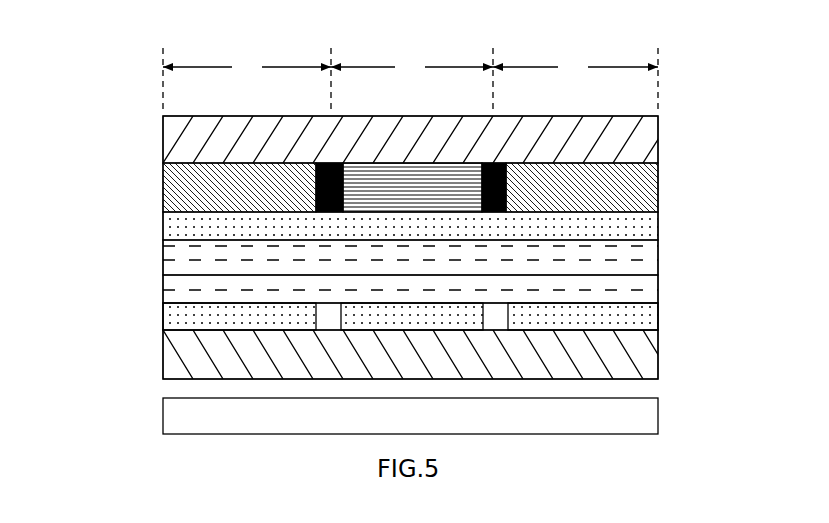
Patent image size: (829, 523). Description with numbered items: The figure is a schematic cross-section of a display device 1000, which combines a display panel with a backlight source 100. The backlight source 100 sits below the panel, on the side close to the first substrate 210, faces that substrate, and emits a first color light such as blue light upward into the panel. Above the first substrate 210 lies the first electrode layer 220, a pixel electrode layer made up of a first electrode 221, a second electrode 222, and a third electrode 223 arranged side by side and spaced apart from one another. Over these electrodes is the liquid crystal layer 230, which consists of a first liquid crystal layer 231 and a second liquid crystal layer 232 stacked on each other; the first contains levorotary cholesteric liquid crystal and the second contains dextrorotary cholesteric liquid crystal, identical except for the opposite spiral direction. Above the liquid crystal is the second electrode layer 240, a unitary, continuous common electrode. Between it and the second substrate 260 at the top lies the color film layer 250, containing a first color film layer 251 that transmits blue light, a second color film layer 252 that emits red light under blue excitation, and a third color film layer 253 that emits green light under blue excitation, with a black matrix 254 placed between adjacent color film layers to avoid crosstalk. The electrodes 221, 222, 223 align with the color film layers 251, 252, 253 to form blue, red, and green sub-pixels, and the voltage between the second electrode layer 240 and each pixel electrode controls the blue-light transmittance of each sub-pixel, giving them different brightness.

The display device 1000 is at (450, 29).
The backlight source 100 is at (658, 412).
The first substrate 210 is at (658, 352).
The first electrode layer 220 is at (405, 337).
The first electrode 221 is at (203, 310).
The second electrode 222 is at (367, 318).
The third electrode 223 is at (658, 310).
The liquid crystal layer 230 is at (481, 271).
The first liquid crystal layer 231 is at (658, 255).
The second liquid crystal layer 232 is at (658, 282).
The second electrode layer 240 is at (658, 227).
The color film layer 250 is at (410, 145).
The first color film layer 251 is at (276, 163).
The second color film layer 252 is at (443, 178).
The third color film layer 253 is at (613, 163).
The black matrix 254 is at (492, 165).
The second substrate 260 is at (658, 135).